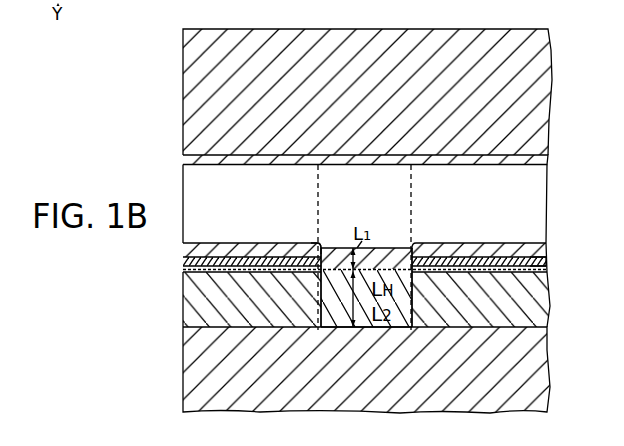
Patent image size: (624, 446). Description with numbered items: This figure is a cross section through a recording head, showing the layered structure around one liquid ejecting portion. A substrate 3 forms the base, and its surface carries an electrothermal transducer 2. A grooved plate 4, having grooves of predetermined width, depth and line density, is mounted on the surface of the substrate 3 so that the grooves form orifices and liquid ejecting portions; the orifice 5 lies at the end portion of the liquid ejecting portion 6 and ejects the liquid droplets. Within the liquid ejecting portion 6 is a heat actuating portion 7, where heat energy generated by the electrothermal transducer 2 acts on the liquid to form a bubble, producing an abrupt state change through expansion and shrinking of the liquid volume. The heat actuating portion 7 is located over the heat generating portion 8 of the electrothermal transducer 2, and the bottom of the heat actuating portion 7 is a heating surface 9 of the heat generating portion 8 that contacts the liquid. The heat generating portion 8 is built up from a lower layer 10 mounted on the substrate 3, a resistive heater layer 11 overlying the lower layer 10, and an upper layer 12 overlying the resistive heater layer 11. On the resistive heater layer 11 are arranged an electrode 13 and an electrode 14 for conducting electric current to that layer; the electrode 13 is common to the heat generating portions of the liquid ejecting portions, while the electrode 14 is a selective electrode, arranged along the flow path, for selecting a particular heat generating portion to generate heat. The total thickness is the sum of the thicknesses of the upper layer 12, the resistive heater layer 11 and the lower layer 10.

The electrothermal transducer 2 is at (373, 328).
The substrate 3 is at (183, 374).
The grooved plate 4 is at (400, 30).
The orifice 5 is at (188, 187).
The liquid ejecting portion 6 is at (357, 158).
The heat actuating portion 7 is at (399, 189).
The heat generating portion 8 is at (418, 294).
The heating surface 9 is at (412, 244).
The lower layer 10 is at (336, 328).
The resistive heater layer 11 is at (321, 286).
The upper layer 12 is at (333, 248).
The common electrode 13 is at (183, 263).
The selective electrode 14 is at (545, 263).